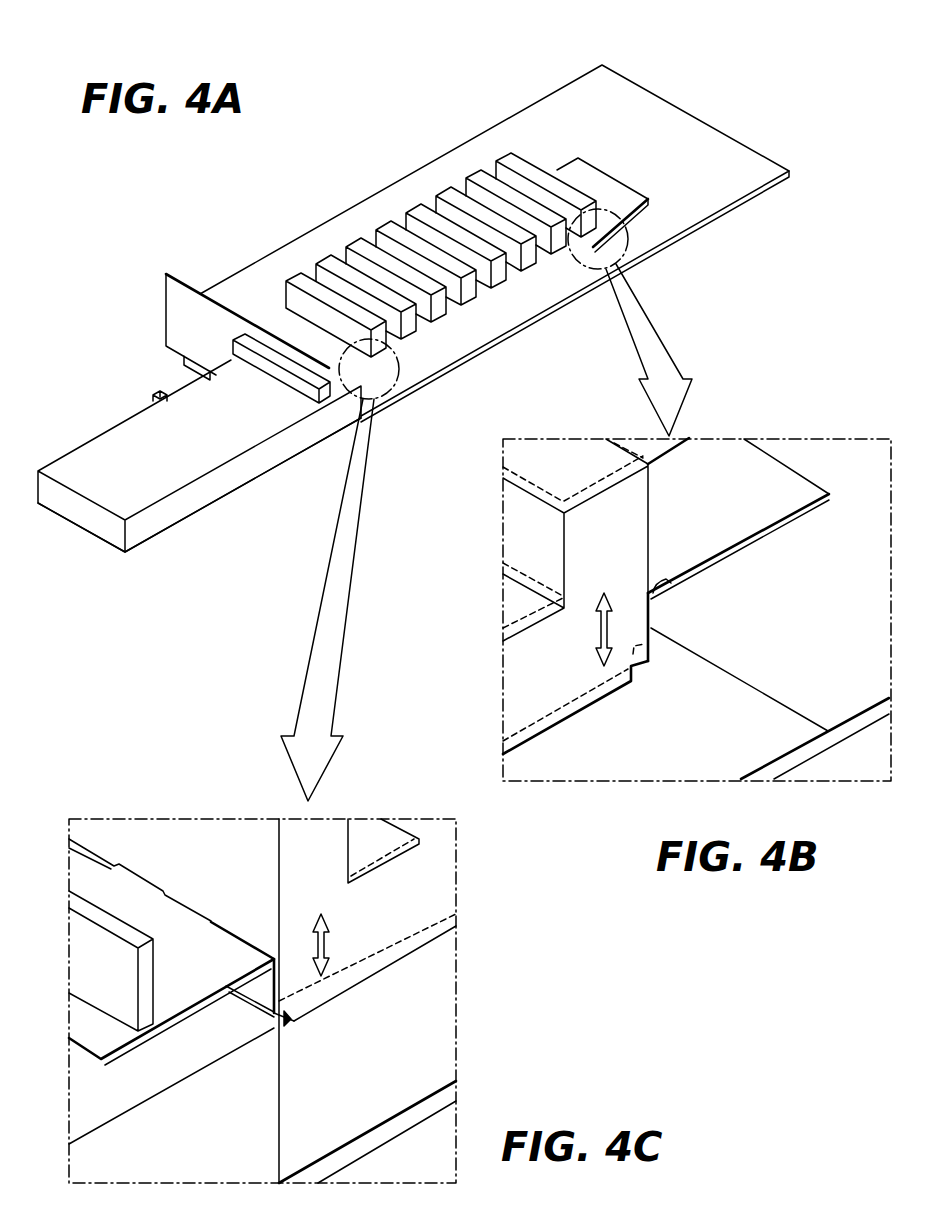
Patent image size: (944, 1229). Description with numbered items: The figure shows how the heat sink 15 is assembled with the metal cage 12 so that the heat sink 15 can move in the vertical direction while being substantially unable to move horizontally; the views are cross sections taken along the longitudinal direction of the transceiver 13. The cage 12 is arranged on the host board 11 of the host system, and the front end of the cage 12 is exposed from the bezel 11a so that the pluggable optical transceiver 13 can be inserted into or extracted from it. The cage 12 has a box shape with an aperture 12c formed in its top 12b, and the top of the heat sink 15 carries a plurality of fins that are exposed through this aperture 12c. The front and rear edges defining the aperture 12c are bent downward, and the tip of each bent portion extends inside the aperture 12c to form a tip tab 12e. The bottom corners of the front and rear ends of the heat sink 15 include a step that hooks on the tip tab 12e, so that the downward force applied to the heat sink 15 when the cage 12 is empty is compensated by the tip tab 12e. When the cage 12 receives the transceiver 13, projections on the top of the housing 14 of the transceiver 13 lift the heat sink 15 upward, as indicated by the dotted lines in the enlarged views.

In FIG. 4A, the host board 11 is at (728, 160).
In FIG. 4A, the bezel 11a is at (178, 312).
In FIG. 4A, the cage 12 is at (612, 176).
In FIG. 4C, the cage 12 is at (197, 1007).
In FIG. 4A, the top of the cage 12b is at (620, 205).
In FIG. 4B, the top of the cage 12b is at (693, 542).
In FIG. 4C, the top of the cage 12b is at (173, 925).
In FIG. 4B, the aperture 12c is at (677, 587).
In FIG. 4C, the aperture 12c is at (228, 928).
In FIG. 4B, the tip tab 12e is at (647, 657).
In FIG. 4C, the tip tab 12e is at (290, 1023).
In FIG. 4A, the pluggable optical transceiver 13 is at (96, 545).
In FIG. 4A, the housing 14 is at (270, 410).
In FIG. 4C, the housing 14 is at (110, 1093).
In FIG. 4A, the heat sink 15 is at (516, 162).
In FIG. 4B, the heat sink 15 is at (623, 538).
In FIG. 4C, the heat sink 15 is at (375, 925).